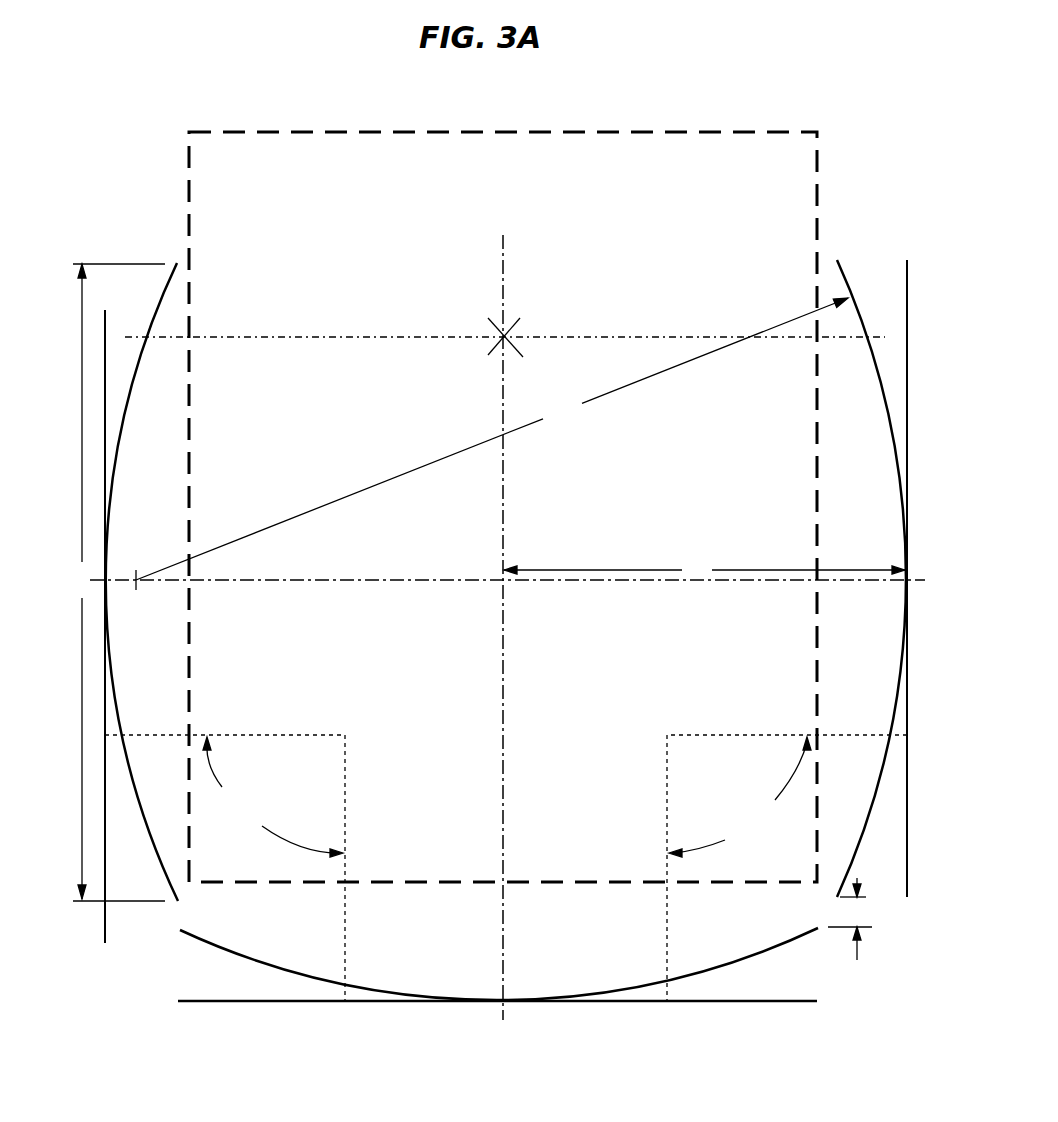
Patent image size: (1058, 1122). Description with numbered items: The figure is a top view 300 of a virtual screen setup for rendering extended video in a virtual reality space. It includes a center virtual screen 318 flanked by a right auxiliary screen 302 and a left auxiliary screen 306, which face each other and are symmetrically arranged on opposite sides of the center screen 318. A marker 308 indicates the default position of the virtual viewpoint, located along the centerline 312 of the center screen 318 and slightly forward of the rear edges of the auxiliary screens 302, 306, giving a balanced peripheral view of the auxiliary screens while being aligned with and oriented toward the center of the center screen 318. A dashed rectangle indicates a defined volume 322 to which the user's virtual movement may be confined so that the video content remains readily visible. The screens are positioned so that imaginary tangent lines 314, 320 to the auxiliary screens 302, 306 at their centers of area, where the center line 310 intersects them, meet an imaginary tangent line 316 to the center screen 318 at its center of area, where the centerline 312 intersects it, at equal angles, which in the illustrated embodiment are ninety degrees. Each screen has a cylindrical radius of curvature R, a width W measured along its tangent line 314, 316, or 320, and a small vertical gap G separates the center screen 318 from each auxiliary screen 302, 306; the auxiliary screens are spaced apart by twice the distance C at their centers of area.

The top view 300 is at (502, 554).
The right auxiliary screen 302 is at (179, 285).
The left auxiliary screen 306 is at (878, 372).
The marker 308 is at (508, 328).
The center line 310 is at (344, 583).
The centerline 312 is at (508, 763).
The tangent line 314 is at (103, 920).
The tangent line 316 is at (258, 1001).
The center virtual screen 318 is at (737, 948).
The tangent line 320 is at (903, 282).
The defined volume 322 is at (595, 131).